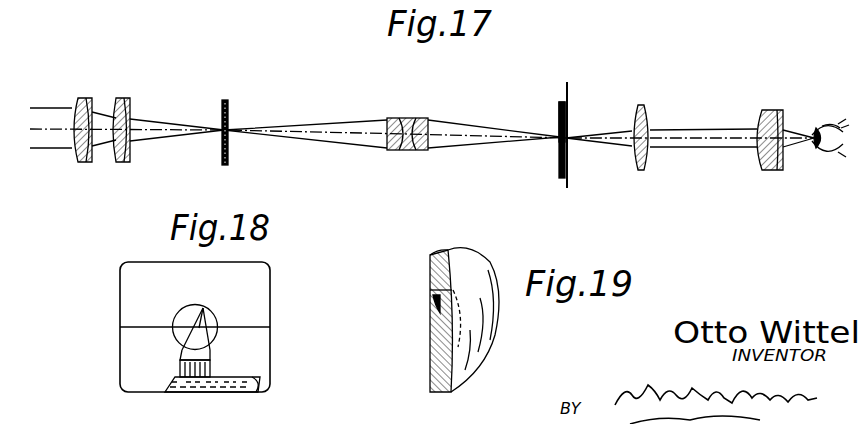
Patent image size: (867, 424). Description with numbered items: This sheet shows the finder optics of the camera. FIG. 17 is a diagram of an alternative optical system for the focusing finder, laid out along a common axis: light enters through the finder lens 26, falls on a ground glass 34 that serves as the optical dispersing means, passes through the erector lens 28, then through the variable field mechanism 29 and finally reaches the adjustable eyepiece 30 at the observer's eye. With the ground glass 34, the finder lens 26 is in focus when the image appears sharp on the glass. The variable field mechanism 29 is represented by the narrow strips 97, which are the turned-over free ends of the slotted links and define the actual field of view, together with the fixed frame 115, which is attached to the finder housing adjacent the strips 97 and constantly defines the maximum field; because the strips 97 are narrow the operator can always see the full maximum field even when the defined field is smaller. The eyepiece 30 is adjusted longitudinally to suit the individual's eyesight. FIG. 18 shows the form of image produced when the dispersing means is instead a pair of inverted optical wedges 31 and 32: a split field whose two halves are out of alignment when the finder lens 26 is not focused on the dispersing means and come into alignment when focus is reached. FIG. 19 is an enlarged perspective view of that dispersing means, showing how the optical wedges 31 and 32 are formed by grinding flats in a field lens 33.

In FIG. 17, the finder lens 26 is at (113, 98).
In FIG. 17, the ground glass 34 is at (225, 100).
In FIG. 17, the erector lens 28 is at (403, 118).
In FIG. 17, the variable field mechanism 29 is at (561, 103).
In FIG. 17, the fixed frame 115 is at (570, 100).
In FIG. 17, the narrow strip 97 is at (561, 174).
In FIG. 17, the adjustable eyepiece 30 is at (646, 111).
In FIG. 19, the field lens 33 is at (470, 249).
In FIG. 19, the optical wedge 31 is at (433, 305).
In FIG. 19, the optical wedge 32 is at (440, 341).